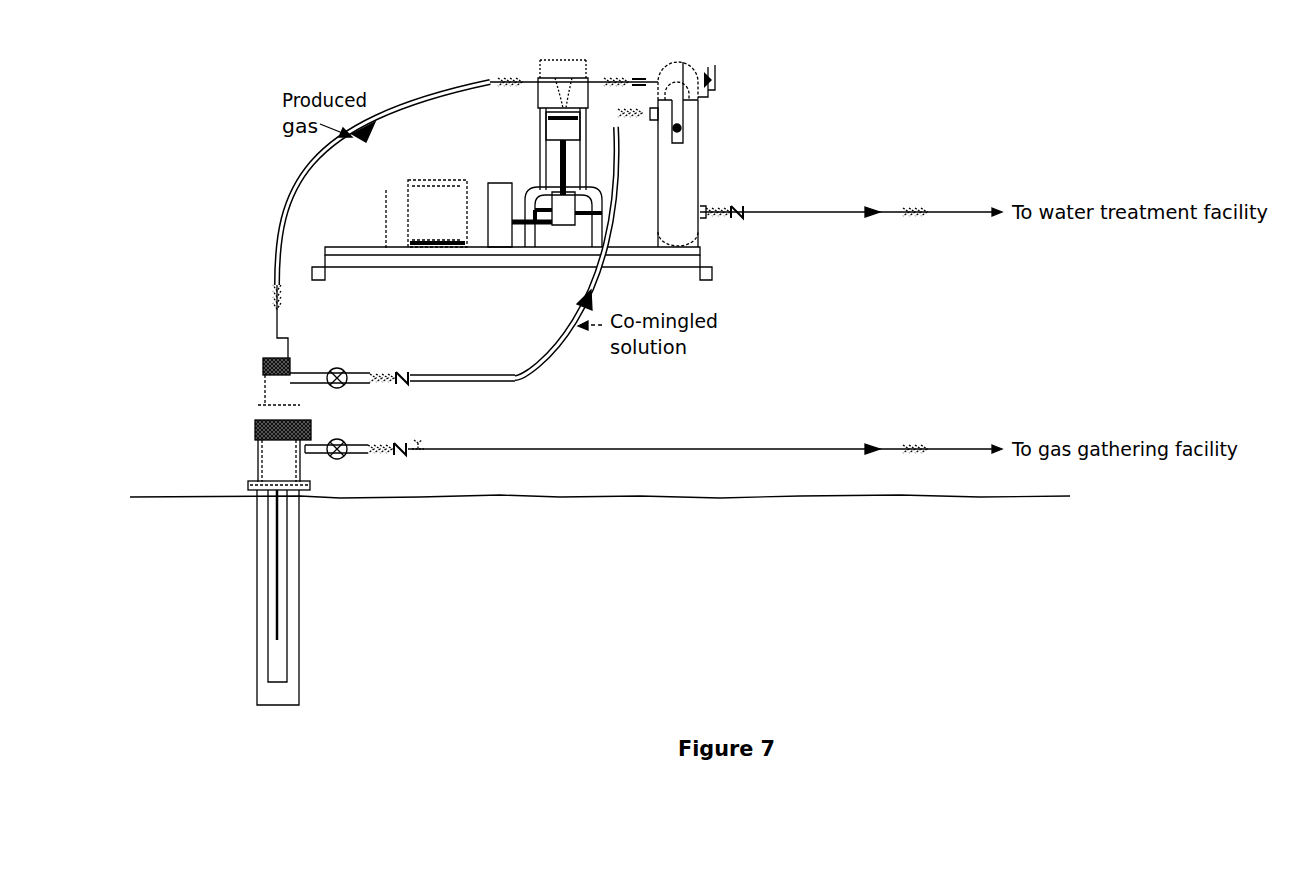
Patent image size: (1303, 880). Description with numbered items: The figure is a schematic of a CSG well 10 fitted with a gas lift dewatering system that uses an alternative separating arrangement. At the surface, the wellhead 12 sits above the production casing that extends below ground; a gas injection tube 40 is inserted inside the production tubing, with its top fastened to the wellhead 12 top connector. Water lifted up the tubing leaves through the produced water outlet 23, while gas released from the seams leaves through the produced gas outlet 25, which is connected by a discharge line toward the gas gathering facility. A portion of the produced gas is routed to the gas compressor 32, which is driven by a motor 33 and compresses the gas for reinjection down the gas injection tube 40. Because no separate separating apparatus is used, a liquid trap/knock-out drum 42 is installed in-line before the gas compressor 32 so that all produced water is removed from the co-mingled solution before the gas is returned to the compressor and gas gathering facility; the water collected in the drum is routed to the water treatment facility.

The CSG well 10 is at (245, 488).
The wellhead 12 is at (240, 433).
The produced water outlet 23 is at (363, 368).
The produced gas outlet 25 is at (378, 461).
The gas compressor 32 is at (525, 172).
The motor 33 is at (383, 183).
The gas injection tube 40 is at (273, 322).
The liquid trap/knock-out drum 42 is at (700, 165).